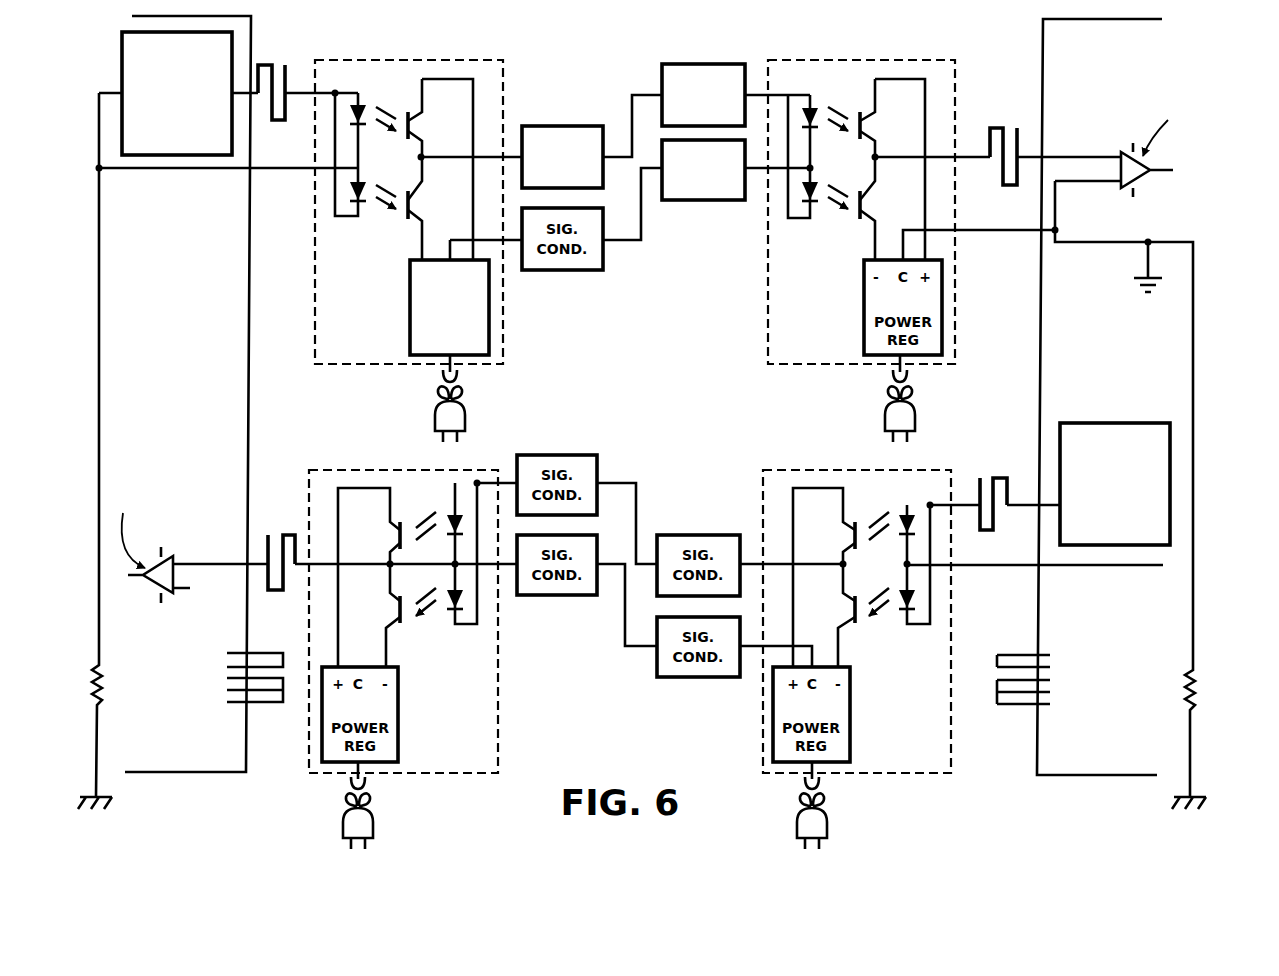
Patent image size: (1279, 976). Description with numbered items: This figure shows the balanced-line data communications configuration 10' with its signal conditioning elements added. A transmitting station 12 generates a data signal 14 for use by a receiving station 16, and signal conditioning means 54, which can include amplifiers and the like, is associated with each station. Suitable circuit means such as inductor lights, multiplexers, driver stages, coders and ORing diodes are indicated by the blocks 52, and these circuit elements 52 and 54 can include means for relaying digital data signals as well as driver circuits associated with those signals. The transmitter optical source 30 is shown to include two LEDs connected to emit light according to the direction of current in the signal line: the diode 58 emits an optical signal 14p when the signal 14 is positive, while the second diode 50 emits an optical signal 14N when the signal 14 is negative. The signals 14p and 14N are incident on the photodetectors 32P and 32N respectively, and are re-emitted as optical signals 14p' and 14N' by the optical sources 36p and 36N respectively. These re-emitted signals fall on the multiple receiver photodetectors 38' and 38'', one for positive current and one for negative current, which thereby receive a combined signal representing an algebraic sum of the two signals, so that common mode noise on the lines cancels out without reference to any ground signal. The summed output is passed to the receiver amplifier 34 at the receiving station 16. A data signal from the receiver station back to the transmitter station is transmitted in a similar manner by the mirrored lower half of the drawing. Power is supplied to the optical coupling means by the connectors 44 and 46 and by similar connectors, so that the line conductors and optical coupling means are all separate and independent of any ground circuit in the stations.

The configuration 10' is at (674, 129).
The transmitting station 12 is at (197, 753).
The data signal 14 is at (269, 63).
The optical signal 14p is at (410, 78).
The optical signal 14N is at (365, 241).
The optical signal 14p' is at (866, 82).
The optical signal 14N' is at (819, 231).
The receiving station 16 is at (1075, 757).
The transmitter optical source 30 is at (470, 60).
The photodetector 32P is at (419, 121).
The photodetector 32N is at (419, 204).
The receiver amplifier 34 is at (1143, 176).
The optical source 36p is at (810, 106).
The optical source 36N is at (812, 186).
The receiver photodetector 38' is at (924, 91).
The receiver photodetector 38'' is at (928, 208).
The connector 44 is at (418, 398).
The connector 46 is at (785, 797).
The negative light emitting diode 50 is at (352, 178).
The blocks 52 is at (540, 130).
The signal conditioning means 54 is at (133, 58).
The LED 58 is at (361, 106).